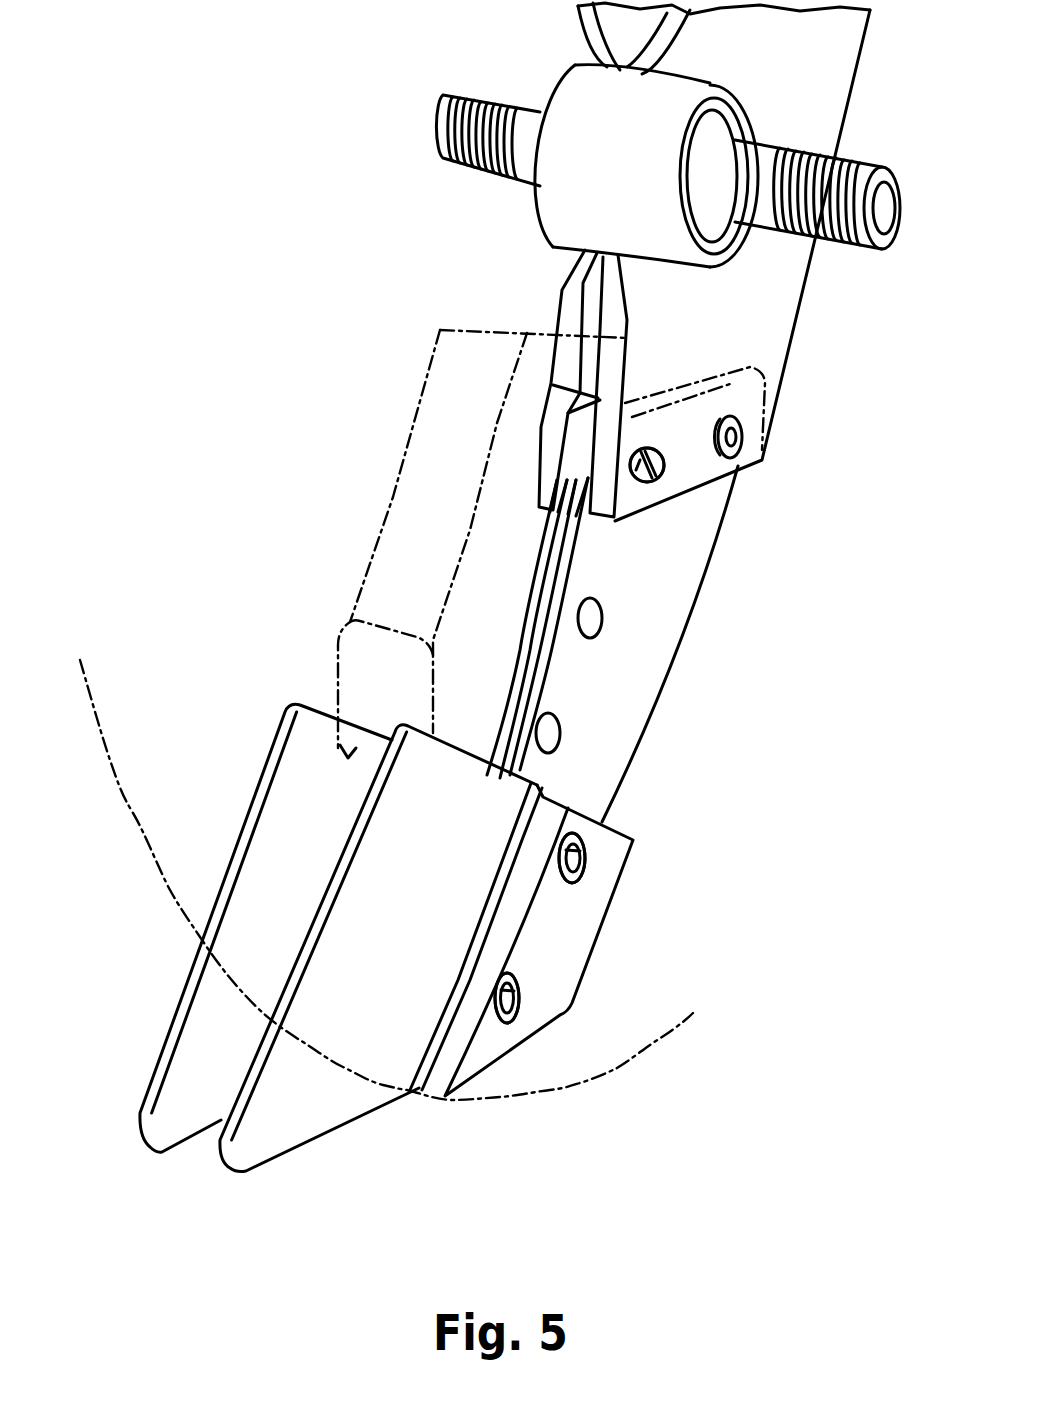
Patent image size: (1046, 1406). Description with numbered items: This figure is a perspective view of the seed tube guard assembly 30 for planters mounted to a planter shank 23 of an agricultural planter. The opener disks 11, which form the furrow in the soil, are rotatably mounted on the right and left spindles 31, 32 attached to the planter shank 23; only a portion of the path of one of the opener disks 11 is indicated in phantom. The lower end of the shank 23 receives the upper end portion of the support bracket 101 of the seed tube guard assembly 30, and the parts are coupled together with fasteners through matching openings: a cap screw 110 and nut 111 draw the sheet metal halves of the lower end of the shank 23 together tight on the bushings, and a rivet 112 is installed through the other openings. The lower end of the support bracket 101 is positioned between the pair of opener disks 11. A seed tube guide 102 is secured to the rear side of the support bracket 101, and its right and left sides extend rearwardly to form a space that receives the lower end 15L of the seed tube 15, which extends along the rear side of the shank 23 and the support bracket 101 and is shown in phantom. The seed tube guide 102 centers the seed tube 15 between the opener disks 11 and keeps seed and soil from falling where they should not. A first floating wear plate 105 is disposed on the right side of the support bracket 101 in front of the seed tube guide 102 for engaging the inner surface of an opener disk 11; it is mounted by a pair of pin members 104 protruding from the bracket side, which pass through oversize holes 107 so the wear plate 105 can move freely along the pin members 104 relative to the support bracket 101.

The opener disks 11 is at (133, 818).
The seed tube 15 is at (417, 497).
The lower end of seed tube 15L is at (348, 758).
The planter shank 23 is at (775, 317).
The seed tube guard assembly 30 is at (222, 499).
The right spindle 31 is at (768, 163).
The left spindle 32 is at (533, 122).
The support bracket 101 is at (638, 687).
The seed tube guide 102 is at (205, 1020).
The pin members 104 is at (585, 848).
The first floating wear plate 105 is at (582, 927).
The oversize holes 107 is at (587, 833).
The cap screw 110 is at (665, 466).
The nut 111 is at (648, 484).
The rivet 112 is at (738, 416).